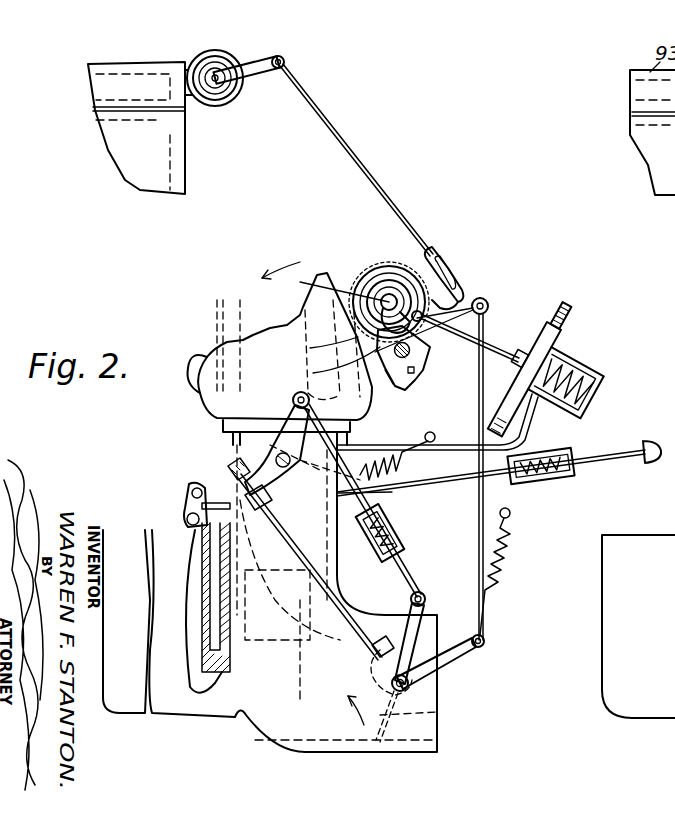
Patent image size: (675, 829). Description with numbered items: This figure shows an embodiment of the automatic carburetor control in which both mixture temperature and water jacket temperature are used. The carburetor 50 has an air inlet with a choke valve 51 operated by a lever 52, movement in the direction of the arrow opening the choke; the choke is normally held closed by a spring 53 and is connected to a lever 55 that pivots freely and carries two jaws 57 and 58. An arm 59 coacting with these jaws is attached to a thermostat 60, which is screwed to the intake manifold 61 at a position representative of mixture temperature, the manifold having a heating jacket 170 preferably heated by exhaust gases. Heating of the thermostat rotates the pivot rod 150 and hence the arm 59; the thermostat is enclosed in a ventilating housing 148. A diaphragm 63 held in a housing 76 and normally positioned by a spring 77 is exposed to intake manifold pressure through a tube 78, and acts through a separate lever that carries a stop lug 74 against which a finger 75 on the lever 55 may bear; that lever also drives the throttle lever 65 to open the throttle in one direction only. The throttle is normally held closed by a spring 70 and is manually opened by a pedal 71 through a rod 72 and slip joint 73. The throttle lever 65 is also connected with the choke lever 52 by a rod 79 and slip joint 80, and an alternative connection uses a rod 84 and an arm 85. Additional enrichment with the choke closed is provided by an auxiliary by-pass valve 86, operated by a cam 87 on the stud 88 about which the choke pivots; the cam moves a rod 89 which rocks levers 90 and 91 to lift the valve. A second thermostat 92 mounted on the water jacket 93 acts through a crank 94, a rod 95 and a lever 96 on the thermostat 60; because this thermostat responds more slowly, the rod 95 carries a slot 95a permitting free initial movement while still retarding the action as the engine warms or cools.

The carburetor 50 is at (270, 601).
The choke valve 51 is at (437, 714).
The lever 52 is at (448, 625).
The spring 53 is at (503, 558).
The lever 55 is at (488, 305).
The jaw 57 is at (334, 365).
The jaw 58 is at (432, 352).
The arm 59 is at (320, 349).
The thermostat 60 is at (394, 266).
The intake manifold 61 is at (251, 335).
The diaphragm 63 is at (540, 332).
The throttle lever 65 is at (292, 405).
The spring 70 is at (400, 464).
The pedal 71 is at (646, 441).
The rod 72 is at (455, 478).
The slip joint 73 is at (546, 482).
The stop lug 74 is at (420, 382).
The finger 75 is at (388, 382).
The housing 76 is at (574, 316).
The spring 77 is at (578, 364).
The tube 78 is at (538, 432).
The rod 79 is at (392, 492).
The slip joint 80 is at (393, 522).
The rod 84 is at (335, 594).
The arm 85 is at (262, 452).
The auxiliary by-pass valve 86 is at (206, 590).
The cam 87 is at (372, 678).
The stud 88 is at (409, 685).
The rod 89 is at (228, 490).
The lever 90 is at (185, 502).
The lever 91 is at (205, 520).
The second thermostat 92 is at (218, 58).
The water jacket 93 is at (120, 70).
The crank 94 is at (262, 56).
The rod 95 is at (316, 110).
The slot 95a is at (452, 268).
The lever 96 is at (462, 292).
The housing 148 is at (378, 272).
The pivot rod 150 is at (325, 285).
The heating jacket 170 is at (200, 352).